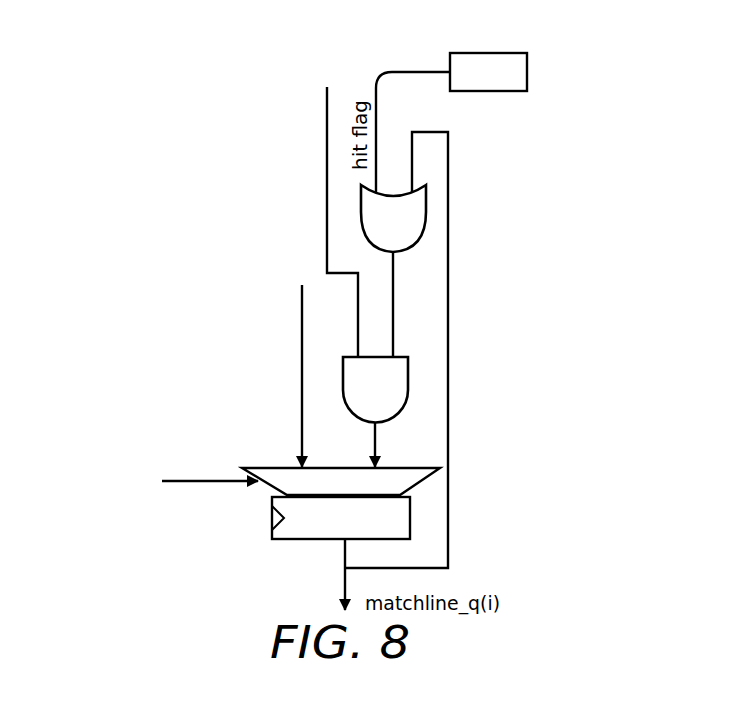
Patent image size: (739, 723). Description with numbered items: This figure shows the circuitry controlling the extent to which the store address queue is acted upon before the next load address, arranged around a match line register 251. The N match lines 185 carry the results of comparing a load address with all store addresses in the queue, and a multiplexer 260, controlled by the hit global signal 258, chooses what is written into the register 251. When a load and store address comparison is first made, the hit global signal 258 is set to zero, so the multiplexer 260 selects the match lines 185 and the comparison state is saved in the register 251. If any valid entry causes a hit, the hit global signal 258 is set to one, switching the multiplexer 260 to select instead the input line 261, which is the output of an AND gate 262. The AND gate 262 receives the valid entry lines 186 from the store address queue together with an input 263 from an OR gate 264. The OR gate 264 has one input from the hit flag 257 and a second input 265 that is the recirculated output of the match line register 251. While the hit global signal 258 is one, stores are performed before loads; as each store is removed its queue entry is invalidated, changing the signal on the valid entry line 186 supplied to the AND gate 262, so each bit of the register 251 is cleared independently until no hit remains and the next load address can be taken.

The hit flag 257 is at (508, 54).
The valid entry lines 186 is at (327, 128).
The second input 265 is at (448, 160).
The OR gate 264 is at (426, 215).
The input 263 is at (393, 292).
The AND gate 262 is at (408, 380).
The input line 261 is at (380, 430).
The match lines 185 is at (302, 347).
The hit global signal 258 is at (196, 480).
The multiplexer 260 is at (418, 486).
The match line register 251 is at (308, 540).